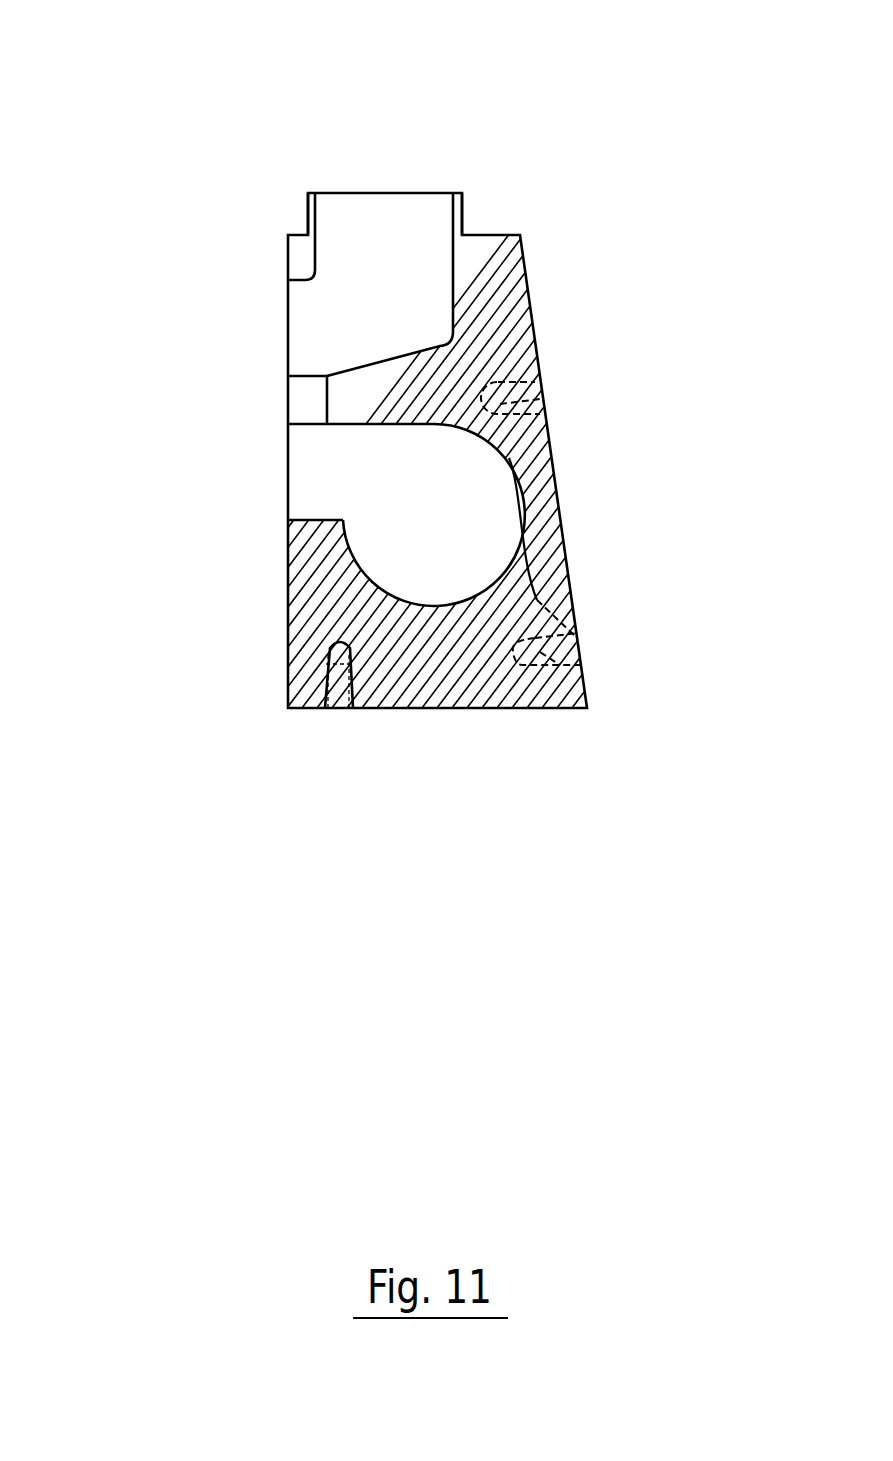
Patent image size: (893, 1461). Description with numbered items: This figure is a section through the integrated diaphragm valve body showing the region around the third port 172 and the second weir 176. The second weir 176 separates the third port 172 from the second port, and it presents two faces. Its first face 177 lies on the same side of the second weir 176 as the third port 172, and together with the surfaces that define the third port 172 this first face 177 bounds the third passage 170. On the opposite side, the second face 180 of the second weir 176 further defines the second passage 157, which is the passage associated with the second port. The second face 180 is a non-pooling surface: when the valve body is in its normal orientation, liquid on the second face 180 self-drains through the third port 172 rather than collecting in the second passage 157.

The third passage 170 is at (315, 248).
The third port 172 is at (453, 193).
The first face of the second weir 177 is at (388, 355).
The second face of the second weir 180 is at (342, 423).
The second weir 176 is at (382, 425).
The second passage 157 is at (367, 573).